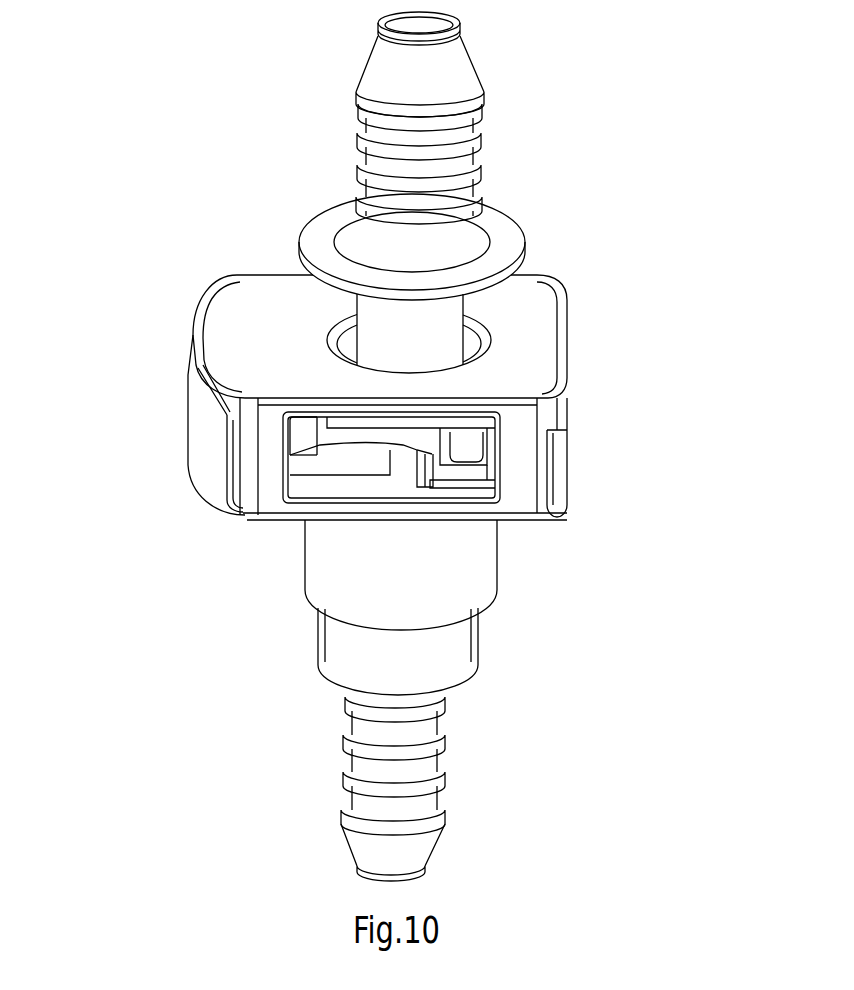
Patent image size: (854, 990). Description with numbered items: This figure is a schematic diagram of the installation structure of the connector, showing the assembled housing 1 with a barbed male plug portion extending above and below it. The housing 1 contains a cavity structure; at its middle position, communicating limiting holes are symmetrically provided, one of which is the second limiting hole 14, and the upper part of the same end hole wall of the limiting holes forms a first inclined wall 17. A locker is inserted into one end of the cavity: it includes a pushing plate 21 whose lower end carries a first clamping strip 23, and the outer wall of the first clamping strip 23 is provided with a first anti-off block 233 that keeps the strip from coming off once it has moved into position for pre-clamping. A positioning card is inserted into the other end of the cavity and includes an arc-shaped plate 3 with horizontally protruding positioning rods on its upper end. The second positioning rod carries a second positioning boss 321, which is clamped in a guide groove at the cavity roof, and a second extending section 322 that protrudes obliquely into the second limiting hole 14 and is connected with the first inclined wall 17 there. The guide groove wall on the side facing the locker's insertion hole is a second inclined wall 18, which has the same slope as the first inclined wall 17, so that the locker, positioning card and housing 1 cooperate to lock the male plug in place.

The housing 1 is at (228, 280).
The arc-shaped plate 3 is at (183, 461).
The second limiting hole 14 is at (507, 537).
The first inclined wall 17 is at (521, 468).
The second inclined wall 18 is at (411, 395).
The pushing plate 21 is at (593, 434).
The first clamping strip 23 is at (311, 488).
The first anti-off block 233 is at (397, 493).
The second positioning boss 321 is at (284, 455).
The second extending section 322 is at (494, 427).